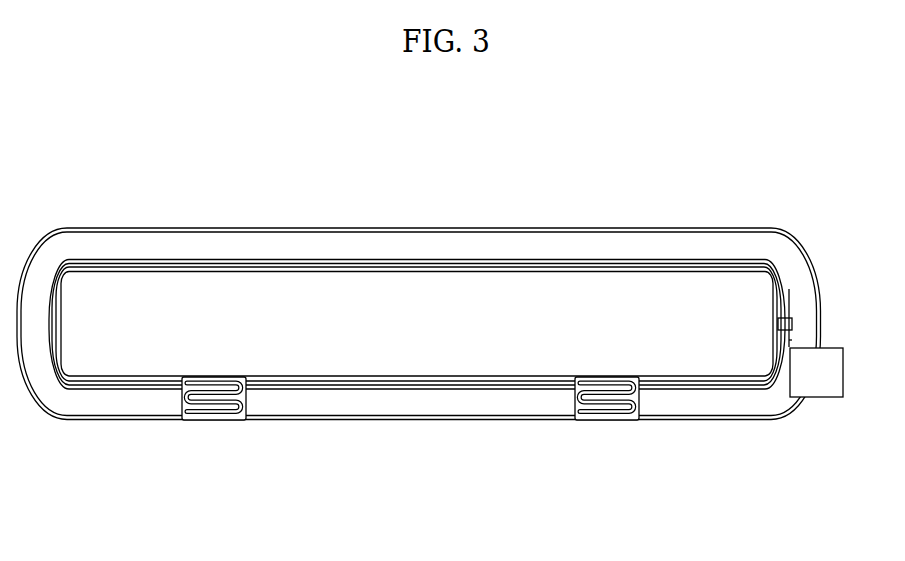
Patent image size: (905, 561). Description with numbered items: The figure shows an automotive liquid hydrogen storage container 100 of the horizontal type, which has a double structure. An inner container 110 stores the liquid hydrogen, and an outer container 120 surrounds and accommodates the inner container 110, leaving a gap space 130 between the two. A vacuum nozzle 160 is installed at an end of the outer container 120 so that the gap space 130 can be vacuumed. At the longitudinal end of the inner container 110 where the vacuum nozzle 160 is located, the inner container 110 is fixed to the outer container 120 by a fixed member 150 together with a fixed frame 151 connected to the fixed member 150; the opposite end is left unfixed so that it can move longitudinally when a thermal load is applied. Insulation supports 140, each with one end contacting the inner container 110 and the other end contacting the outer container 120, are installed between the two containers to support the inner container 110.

The automotive liquid hydrogen storage container 100 is at (133, 167).
The inner container 110 is at (315, 260).
The outer container 120 is at (530, 228).
The gap space 130 is at (428, 242).
The insulation support 140 is at (215, 420).
The fixed member 150 is at (792, 314).
The fixed frame 151 is at (792, 346).
The vacuum nozzle 160 is at (820, 397).